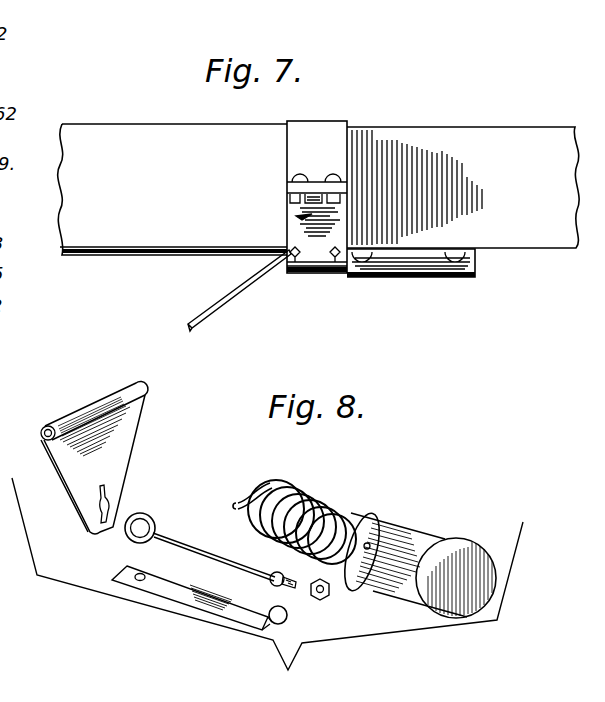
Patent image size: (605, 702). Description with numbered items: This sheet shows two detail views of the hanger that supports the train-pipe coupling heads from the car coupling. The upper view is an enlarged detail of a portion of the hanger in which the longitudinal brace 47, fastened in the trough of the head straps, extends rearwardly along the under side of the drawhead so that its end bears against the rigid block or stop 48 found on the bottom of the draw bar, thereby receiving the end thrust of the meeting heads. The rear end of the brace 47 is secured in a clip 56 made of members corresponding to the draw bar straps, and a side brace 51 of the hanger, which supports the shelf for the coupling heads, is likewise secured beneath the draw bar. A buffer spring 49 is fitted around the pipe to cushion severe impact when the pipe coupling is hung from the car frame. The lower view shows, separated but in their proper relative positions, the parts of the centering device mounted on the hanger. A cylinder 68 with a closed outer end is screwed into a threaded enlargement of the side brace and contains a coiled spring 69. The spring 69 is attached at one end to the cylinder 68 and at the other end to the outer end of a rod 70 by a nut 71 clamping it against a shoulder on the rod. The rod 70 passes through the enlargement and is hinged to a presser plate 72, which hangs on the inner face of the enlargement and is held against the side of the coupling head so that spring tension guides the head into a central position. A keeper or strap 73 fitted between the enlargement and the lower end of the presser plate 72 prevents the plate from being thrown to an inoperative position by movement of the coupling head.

In FIG. 7, the longitudinal brace 47 is at (143, 236).
In FIG. 7, the block or stop 48 is at (423, 264).
In FIG. 7, the buffer spring 49 is at (463, 187).
In FIG. 7, the brace 51 is at (227, 305).
In FIG. 7, the clip 56 is at (310, 218).
In FIG. 8, the cylinder 68 is at (417, 564).
In FIG. 8, the coiled spring 69 is at (320, 493).
In FIG. 8, the rod 70 is at (182, 548).
In FIG. 8, the nut 71 is at (327, 597).
In FIG. 8, the presser plate 72 is at (94, 458).
In FIG. 8, the keeper or strap 73 is at (203, 601).